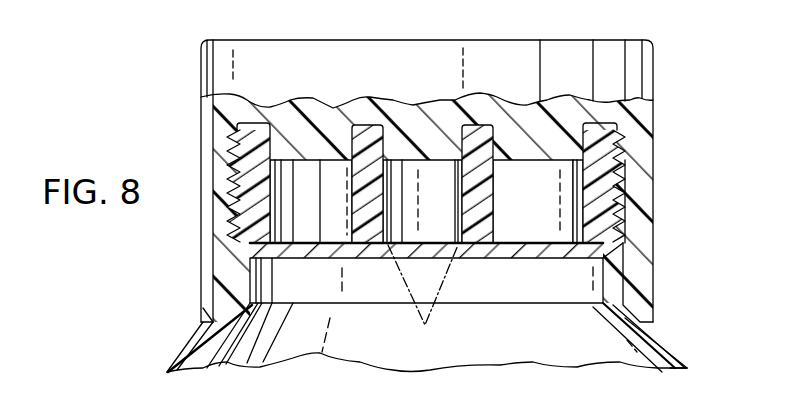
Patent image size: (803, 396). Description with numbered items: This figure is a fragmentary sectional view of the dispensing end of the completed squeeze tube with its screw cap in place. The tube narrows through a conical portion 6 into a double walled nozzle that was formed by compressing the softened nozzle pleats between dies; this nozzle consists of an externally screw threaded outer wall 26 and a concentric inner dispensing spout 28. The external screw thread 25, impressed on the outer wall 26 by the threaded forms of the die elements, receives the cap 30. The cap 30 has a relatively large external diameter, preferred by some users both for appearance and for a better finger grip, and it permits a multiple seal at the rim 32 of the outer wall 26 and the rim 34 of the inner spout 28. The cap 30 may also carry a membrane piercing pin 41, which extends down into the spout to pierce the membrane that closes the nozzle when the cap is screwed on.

The conical portion 6 is at (663, 357).
The external screw thread 25 is at (623, 167).
The outer wall 26 is at (245, 160).
The inner dispensing spout 28 is at (460, 212).
The cap 30 is at (640, 150).
The rim 32 is at (245, 123).
The rim 34 is at (366, 125).
The membrane piercing pin 41 is at (447, 279).